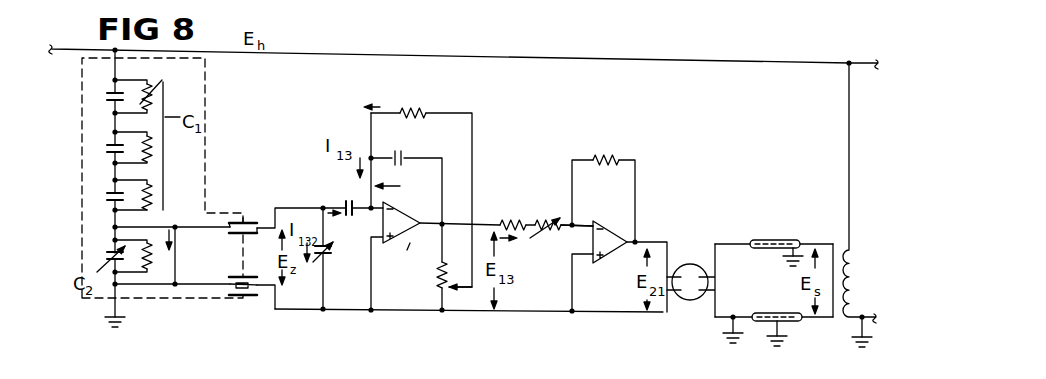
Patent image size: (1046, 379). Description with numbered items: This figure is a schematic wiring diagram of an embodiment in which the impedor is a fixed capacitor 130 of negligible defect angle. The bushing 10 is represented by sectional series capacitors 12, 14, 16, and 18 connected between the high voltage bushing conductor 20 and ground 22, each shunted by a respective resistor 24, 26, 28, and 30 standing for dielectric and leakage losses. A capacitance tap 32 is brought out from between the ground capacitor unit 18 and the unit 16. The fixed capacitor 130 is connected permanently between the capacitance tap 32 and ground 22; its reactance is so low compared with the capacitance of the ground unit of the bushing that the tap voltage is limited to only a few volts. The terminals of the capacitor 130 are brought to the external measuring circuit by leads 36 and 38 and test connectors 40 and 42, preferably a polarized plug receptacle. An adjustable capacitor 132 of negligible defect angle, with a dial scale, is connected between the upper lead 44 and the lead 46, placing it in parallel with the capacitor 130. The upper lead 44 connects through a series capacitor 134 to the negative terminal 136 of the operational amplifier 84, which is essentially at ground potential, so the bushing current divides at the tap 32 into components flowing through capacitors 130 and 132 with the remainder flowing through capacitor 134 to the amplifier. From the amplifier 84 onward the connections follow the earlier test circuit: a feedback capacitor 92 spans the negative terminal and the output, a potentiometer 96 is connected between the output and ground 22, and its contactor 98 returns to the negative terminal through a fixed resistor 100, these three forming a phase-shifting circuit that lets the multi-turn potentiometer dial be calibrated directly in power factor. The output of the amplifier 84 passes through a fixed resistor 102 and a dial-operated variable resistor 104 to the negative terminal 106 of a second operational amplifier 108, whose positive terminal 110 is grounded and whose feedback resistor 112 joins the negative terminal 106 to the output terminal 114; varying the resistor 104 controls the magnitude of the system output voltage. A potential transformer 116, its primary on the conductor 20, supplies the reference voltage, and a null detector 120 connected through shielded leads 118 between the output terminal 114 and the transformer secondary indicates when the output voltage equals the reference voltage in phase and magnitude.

The bushing 10 is at (205, 141).
The sectional series capacitor 12 is at (108, 93).
The sectional series capacitor 14 is at (108, 146).
The sectional series capacitor 16 is at (112, 190).
The ground capacitor unit 18 is at (108, 250).
The high voltage bushing conductor 20 is at (311, 50).
The ground 22 is at (115, 316).
The resistor 24 is at (160, 84).
The resistor 26 is at (150, 152).
The resistor 28 is at (150, 193).
The resistor 30 is at (143, 272).
The capacitance tap 32 is at (113, 227).
The lead 36 is at (212, 216).
The lead 38 is at (212, 286).
The test connector 40 is at (246, 221).
The test connector 42 is at (246, 278).
The upper lead 44 is at (305, 207).
The lead 46 is at (305, 306).
The operational amplifier 84 is at (401, 231).
The feedback capacitor 92 is at (402, 157).
The potentiometer 96 is at (429, 267).
The contactor 98 is at (448, 286).
The fixed resistor 100 is at (432, 112).
The fixed resistor 102 is at (495, 222).
The variable resistor 104 is at (541, 224).
The negative terminal 106 is at (603, 205).
The second operational amplifier 108 is at (609, 236).
The positive terminal 110 is at (593, 256).
The feedback resistor 112 is at (617, 160).
The output terminal 114 is at (612, 247).
The potential transformer 116 is at (843, 319).
The shielded leads 118 is at (769, 309).
The null detector 120 is at (681, 265).
The fixed capacitor 130 is at (173, 257).
The adjustable capacitor 132 is at (327, 262).
The capacitor 134 is at (351, 203).
The negative terminal 136 is at (391, 205).